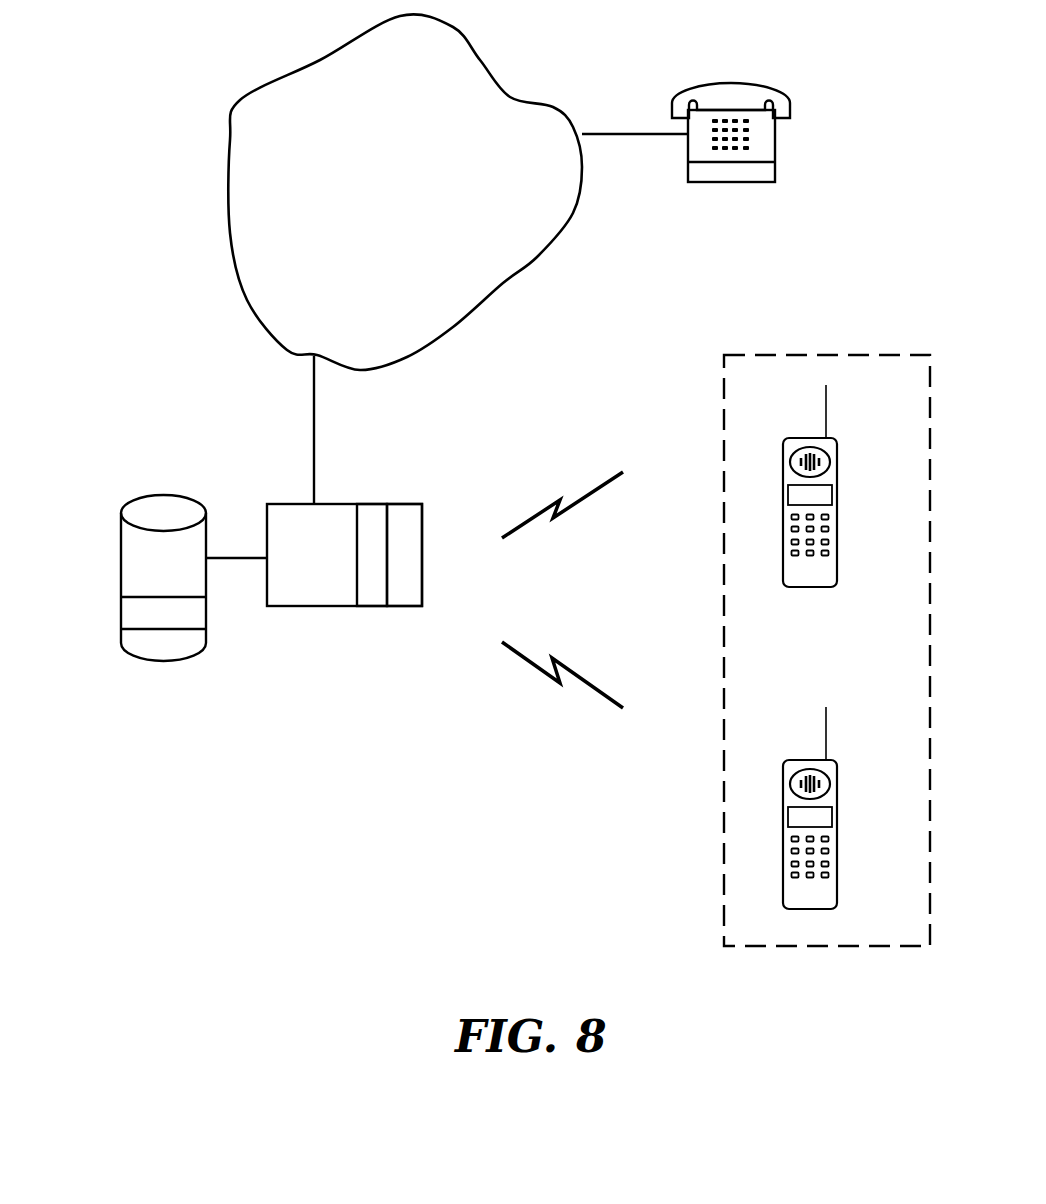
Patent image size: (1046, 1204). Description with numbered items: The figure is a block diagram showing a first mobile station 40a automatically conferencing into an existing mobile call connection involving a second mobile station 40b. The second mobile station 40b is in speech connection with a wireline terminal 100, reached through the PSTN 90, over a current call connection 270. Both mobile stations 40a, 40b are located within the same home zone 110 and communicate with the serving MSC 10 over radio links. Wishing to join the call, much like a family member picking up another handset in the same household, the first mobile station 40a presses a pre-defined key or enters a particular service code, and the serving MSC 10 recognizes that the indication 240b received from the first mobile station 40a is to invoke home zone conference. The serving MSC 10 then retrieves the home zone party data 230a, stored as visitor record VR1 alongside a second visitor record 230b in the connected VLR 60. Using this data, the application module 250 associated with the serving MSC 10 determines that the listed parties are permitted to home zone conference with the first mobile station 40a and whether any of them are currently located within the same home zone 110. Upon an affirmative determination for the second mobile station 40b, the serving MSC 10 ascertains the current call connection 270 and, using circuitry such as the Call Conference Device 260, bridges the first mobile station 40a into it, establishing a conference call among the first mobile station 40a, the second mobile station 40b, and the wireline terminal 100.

The PSTN (public switched telephone network) 90 is at (480, 56).
The wireline terminal 100 is at (740, 82).
The call connection 270 is at (315, 392).
The serving MSC 10 is at (318, 607).
The application module 250 is at (382, 512).
The Call Conference Device 260 is at (417, 518).
The VLR 60 is at (168, 512).
The visitor record VR2 230b is at (127, 607).
The home zone party data 230a is at (127, 638).
The indication 240b is at (523, 527).
The home zone 110 is at (798, 353).
The first mobile station 40a is at (837, 510).
The second mobile station 40b is at (837, 832).